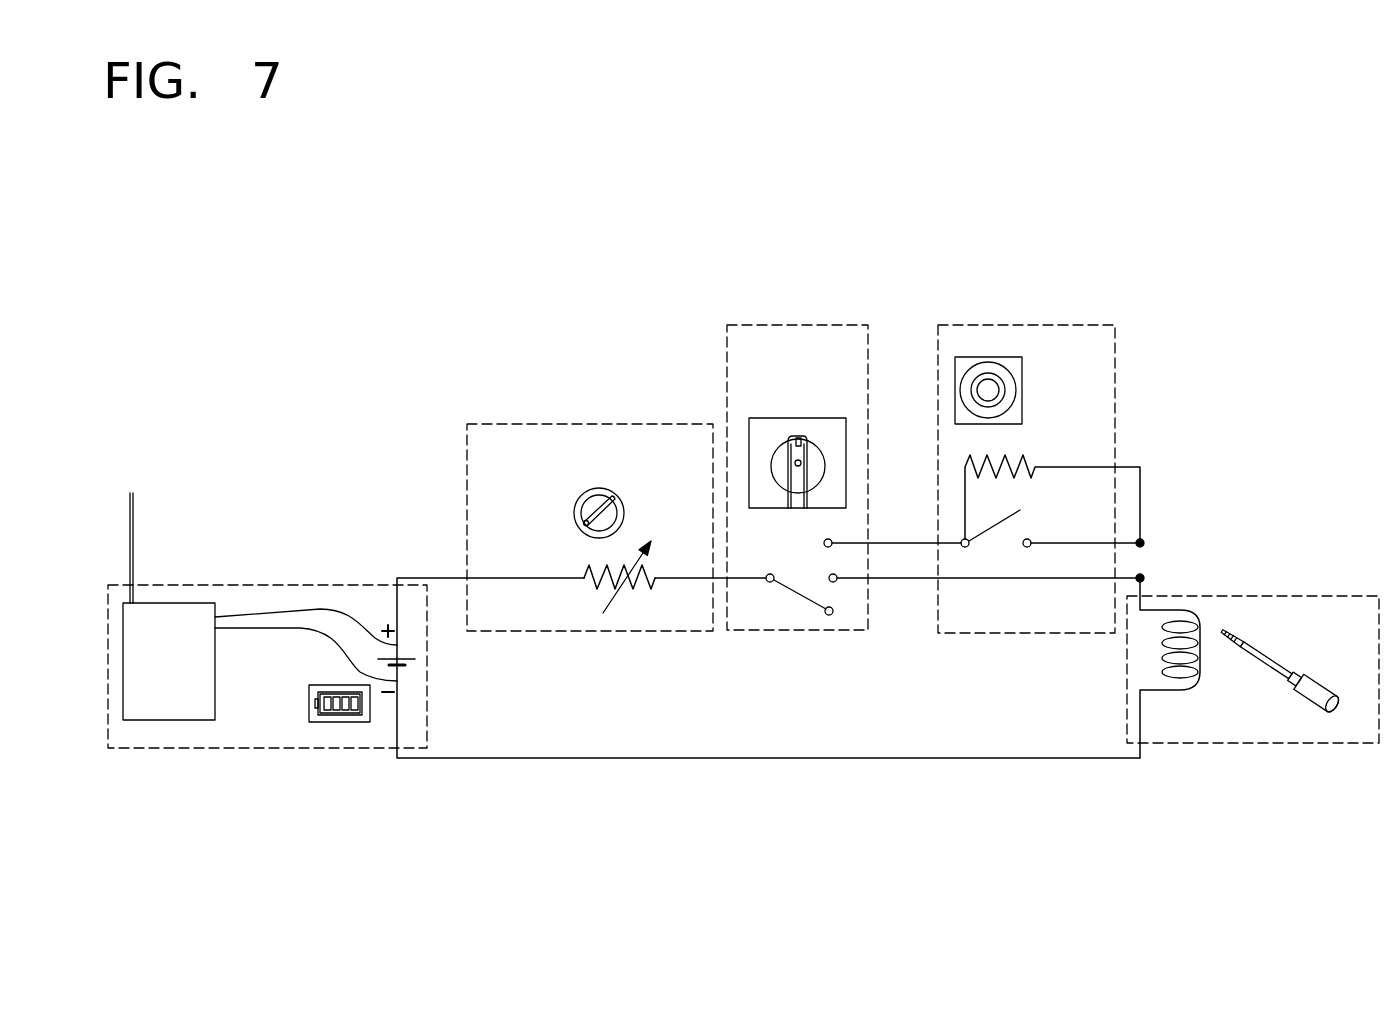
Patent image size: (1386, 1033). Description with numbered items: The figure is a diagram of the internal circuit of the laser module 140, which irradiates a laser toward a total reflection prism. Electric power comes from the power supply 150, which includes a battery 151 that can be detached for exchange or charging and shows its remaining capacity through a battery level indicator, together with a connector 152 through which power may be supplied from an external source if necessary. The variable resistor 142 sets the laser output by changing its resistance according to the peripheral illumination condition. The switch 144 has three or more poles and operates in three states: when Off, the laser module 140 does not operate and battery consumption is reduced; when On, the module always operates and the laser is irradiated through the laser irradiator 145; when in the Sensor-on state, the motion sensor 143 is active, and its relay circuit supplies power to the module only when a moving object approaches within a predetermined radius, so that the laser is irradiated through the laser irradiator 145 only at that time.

The laser module 140 is at (1099, 263).
The variable resistor 142 is at (500, 423).
The motion sensor 143 is at (1117, 382).
The switch 144 is at (835, 323).
The laser irradiator 145 is at (1325, 595).
The power supply 150 is at (197, 752).
The battery 151 is at (343, 724).
The connector 152 is at (134, 593).